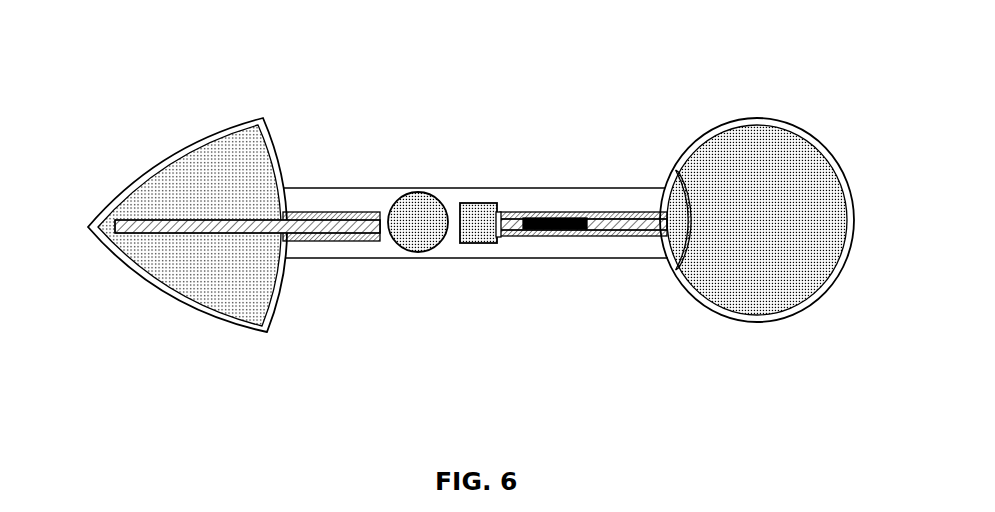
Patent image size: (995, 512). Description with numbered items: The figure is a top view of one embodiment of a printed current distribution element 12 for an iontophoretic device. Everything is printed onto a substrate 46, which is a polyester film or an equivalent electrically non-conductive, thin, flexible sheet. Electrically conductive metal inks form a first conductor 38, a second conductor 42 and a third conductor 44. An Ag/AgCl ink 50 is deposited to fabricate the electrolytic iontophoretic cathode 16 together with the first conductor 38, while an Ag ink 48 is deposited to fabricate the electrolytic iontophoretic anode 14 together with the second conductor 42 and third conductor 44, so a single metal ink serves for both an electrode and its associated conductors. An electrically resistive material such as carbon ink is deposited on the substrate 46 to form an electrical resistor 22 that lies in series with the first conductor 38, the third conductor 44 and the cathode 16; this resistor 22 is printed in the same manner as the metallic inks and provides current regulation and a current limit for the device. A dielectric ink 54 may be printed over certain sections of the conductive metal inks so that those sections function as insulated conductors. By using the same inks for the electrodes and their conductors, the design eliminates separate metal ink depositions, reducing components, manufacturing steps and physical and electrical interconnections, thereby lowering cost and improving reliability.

The printed current distribution element 12 is at (206, 101).
The electrolytic iontophoretic anode 14 is at (200, 273).
The electrolytic iontophoretic cathode 16 is at (762, 299).
The electrical resistor 22 is at (549, 212).
The first conductor 38 is at (633, 243).
The second conductor 42 is at (350, 249).
The third conductor 44 is at (501, 250).
The substrate 46 is at (605, 263).
The Ag ink 48 is at (264, 321).
The Ag/AgCl ink 50 is at (632, 217).
The dielectric ink 54 is at (313, 210).